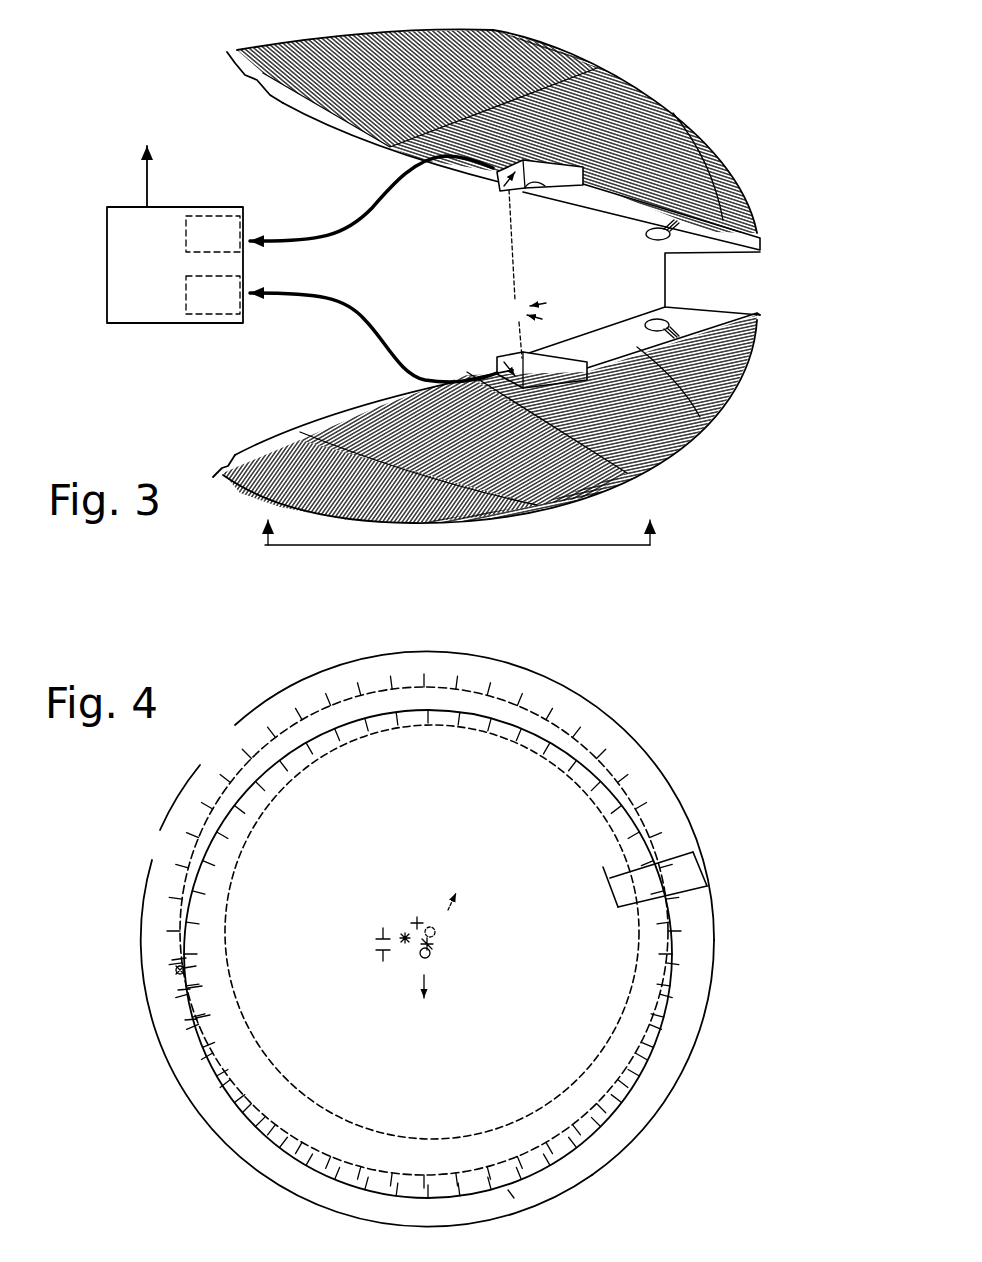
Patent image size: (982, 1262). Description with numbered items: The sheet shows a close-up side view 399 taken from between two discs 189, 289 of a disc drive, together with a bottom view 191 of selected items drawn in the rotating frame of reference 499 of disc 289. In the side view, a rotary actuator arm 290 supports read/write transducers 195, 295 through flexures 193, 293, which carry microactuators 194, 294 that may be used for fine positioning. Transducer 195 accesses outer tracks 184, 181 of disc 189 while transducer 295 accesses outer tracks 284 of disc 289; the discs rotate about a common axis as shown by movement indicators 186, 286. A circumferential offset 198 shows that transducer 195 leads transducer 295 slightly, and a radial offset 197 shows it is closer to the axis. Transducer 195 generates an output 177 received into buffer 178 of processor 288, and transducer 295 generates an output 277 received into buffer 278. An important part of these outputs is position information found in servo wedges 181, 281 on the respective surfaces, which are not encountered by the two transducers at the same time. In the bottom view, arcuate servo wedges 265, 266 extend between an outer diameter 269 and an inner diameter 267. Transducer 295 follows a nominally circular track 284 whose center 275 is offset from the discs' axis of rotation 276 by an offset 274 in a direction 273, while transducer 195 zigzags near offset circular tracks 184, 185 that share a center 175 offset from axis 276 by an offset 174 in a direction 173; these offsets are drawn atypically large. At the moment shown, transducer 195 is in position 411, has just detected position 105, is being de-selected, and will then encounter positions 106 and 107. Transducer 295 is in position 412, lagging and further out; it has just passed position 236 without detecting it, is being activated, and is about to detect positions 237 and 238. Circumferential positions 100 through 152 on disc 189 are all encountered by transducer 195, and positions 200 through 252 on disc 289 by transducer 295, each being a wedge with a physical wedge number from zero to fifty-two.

In FIG. 3, the close-up side view 399 is at (787, 62).
In FIG. 3, the servo wedges 281 is at (502, 29).
In FIG. 3, the movement indicator 286 is at (275, 114).
In FIG. 3, the disc 289 is at (327, 120).
In FIG. 4, the disc 289 is at (524, 795).
In FIG. 3, the outer tracks 284 is at (746, 180).
In FIG. 4, the outer tracks 284 is at (326, 1186).
In FIG. 3, the read/write transducer 295 is at (497, 181).
In FIG. 3, the flexure 293 is at (587, 205).
In FIG. 3, the microactuator 294 is at (646, 224).
In FIG. 3, the rotary actuator arm 290 is at (740, 293).
In FIG. 3, the microactuator 194 is at (646, 324).
In FIG. 3, the flexure 193 is at (588, 345).
In FIG. 3, the read/write transducer 195 is at (497, 363).
In FIG. 3, the radial offset 197 is at (505, 302).
In FIG. 3, the offset 198 is at (507, 312).
In FIG. 3, the outer track 184 is at (750, 368).
In FIG. 4, the outer track 184 is at (368, 1173).
In FIG. 3, the offset circular track 185 is at (720, 407).
In FIG. 4, the offset circular track 185 is at (364, 1131).
In FIG. 3, the servo wedges 181 is at (546, 507).
In FIG. 3, the movement indicator 186 is at (272, 402).
In FIG. 3, the disc 189 is at (320, 405).
In FIG. 4, the disc 189 is at (716, 739).
In FIG. 3, the output 277 is at (371, 198).
In FIG. 3, the output 177 is at (373, 337).
In FIG. 3, the processor 288 is at (153, 277).
In FIG. 3, the buffer 278 is at (229, 245).
In FIG. 3, the buffer 178 is at (229, 307).
In FIG. 3, the bottom view 191 is at (460, 538).
In FIG. 4, the rotating frame of reference 499 is at (697, 700).
In FIG. 4, the outer diameter 269 is at (709, 956).
In FIG. 4, the circumferential position 100 is at (194, 829).
In FIG. 4, the circumferential position 200 is at (552, 1182).
In FIG. 4, the circumferential position 252 is at (521, 1197).
In FIG. 4, the circumferential position 152 is at (221, 795).
In FIG. 4, the arcuate servo wedge 265 is at (706, 888).
In FIG. 4, the arcuate servo wedge 266 is at (687, 849).
In FIG. 4, the inner diameter 267 is at (618, 926).
In FIG. 4, the track center 175 is at (442, 933).
In FIG. 4, the track center 275 is at (440, 960).
In FIG. 4, the offset 174 is at (416, 917).
In FIG. 4, the axis of rotation 276 is at (444, 947).
In FIG. 4, the offset 274 is at (383, 957).
In FIG. 4, the direction (phase) 173 is at (473, 894).
In FIG. 4, the direction (phase) 273 is at (403, 997).
In FIG. 4, the position 411 is at (186, 970).
In FIG. 4, the position 412 is at (176, 970).
In FIG. 4, the position 236 is at (172, 960).
In FIG. 4, the position 105 is at (201, 967).
In FIG. 4, the position 106 is at (206, 993).
In FIG. 4, the position 107 is at (216, 1023).
In FIG. 4, the position 237 is at (170, 995).
In FIG. 4, the position 238 is at (176, 1030).